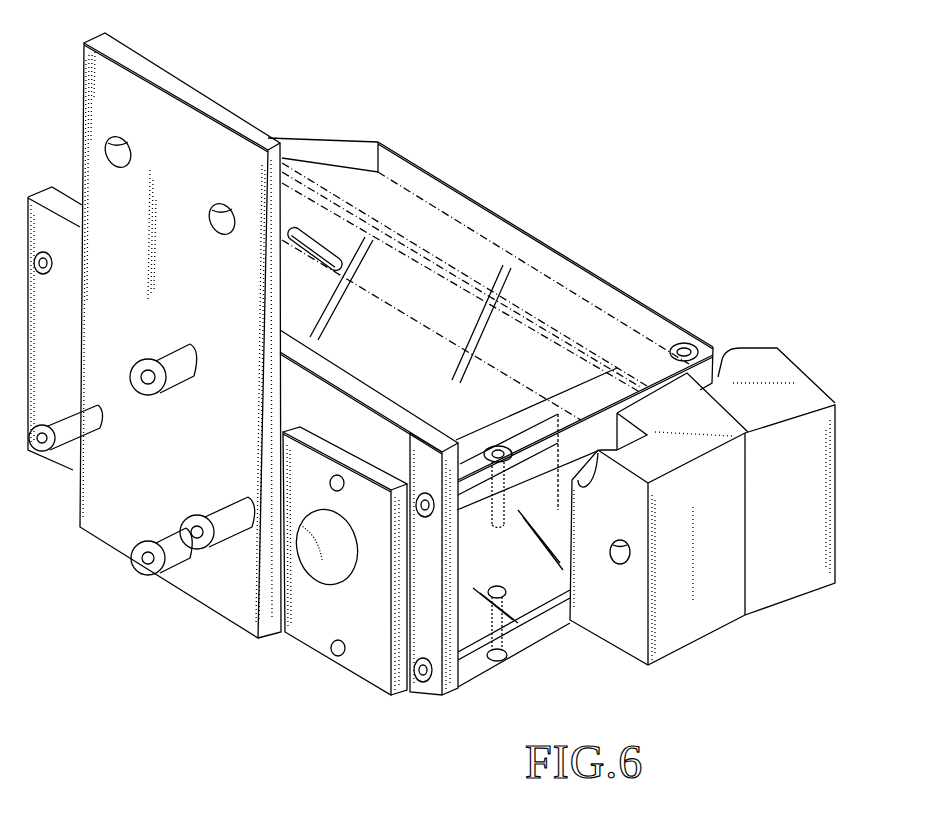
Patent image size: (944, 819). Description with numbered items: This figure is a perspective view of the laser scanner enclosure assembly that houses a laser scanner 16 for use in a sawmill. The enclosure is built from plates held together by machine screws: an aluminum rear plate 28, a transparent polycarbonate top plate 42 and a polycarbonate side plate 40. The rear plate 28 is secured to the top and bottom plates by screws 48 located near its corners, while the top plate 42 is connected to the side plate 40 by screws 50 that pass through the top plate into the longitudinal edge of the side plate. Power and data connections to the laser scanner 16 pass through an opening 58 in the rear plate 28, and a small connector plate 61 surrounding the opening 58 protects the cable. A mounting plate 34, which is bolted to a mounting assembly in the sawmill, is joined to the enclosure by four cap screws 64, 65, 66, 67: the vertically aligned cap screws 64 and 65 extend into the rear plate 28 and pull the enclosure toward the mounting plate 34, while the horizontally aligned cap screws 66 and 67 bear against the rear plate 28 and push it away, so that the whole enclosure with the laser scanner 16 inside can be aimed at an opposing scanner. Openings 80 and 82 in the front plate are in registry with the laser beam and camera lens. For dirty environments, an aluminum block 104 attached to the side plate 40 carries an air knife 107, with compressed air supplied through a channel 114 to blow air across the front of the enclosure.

The laser scanner 16 is at (377, 347).
The rear plate 28 is at (458, 688).
The mounting plate 34 is at (197, 123).
The side plate 40 is at (527, 598).
The top plate 42 is at (540, 290).
The screws 48 is at (424, 493).
The screws 50 is at (497, 447).
The opening 58 is at (343, 553).
The connector plate 61 is at (313, 623).
The cap screw 64 is at (165, 350).
The cap screw 65 is at (150, 540).
The cap screw 66 is at (92, 430).
The cap screw 67 is at (212, 512).
The opening 80 is at (553, 387).
The opening 82 is at (332, 248).
The aluminum block 104 is at (715, 608).
The air knife 107 is at (803, 575).
The channel 114 is at (612, 565).